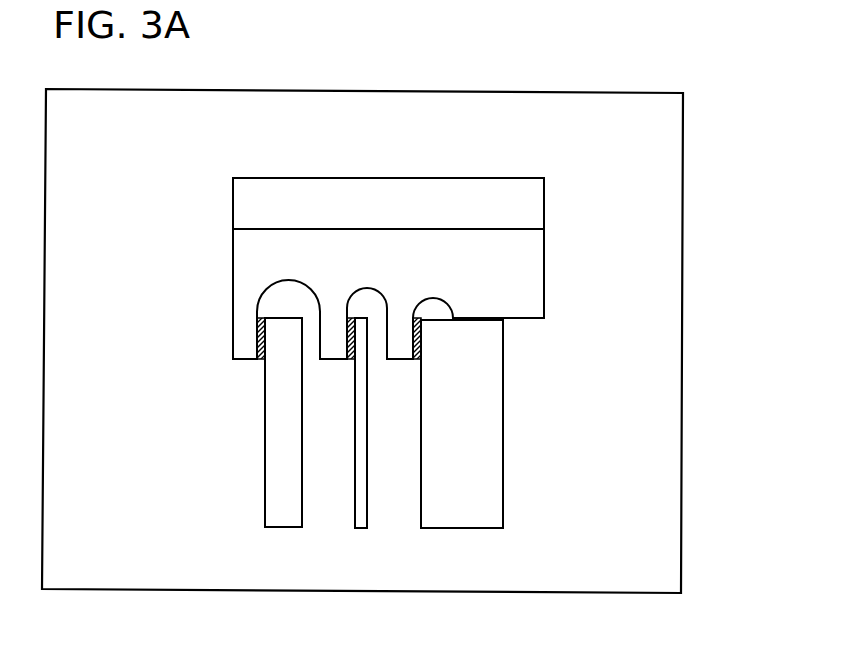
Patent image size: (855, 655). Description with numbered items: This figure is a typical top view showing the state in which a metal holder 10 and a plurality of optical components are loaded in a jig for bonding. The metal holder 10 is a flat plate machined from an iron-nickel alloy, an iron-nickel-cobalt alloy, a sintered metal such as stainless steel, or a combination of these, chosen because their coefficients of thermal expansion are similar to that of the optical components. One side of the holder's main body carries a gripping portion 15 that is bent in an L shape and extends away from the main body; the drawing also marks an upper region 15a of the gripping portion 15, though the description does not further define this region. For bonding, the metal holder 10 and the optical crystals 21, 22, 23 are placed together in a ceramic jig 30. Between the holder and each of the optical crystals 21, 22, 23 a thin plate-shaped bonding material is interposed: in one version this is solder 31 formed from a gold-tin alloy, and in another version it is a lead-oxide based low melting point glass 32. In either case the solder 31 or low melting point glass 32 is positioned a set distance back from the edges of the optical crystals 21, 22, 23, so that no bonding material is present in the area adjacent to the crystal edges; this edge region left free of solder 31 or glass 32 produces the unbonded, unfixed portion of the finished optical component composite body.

The metal holder 10 is at (420, 233).
The gripping portion 15 is at (420, 246).
The upper layer of substrate 15a is at (433, 198).
The optical crystal 21 is at (495, 490).
The optical crystal 22 is at (363, 495).
The optical crystal 23 is at (295, 492).
The ceramic jig 30 is at (672, 163).
The solder 31 is at (297, 379).
The low melting point glass 32 is at (260, 365).